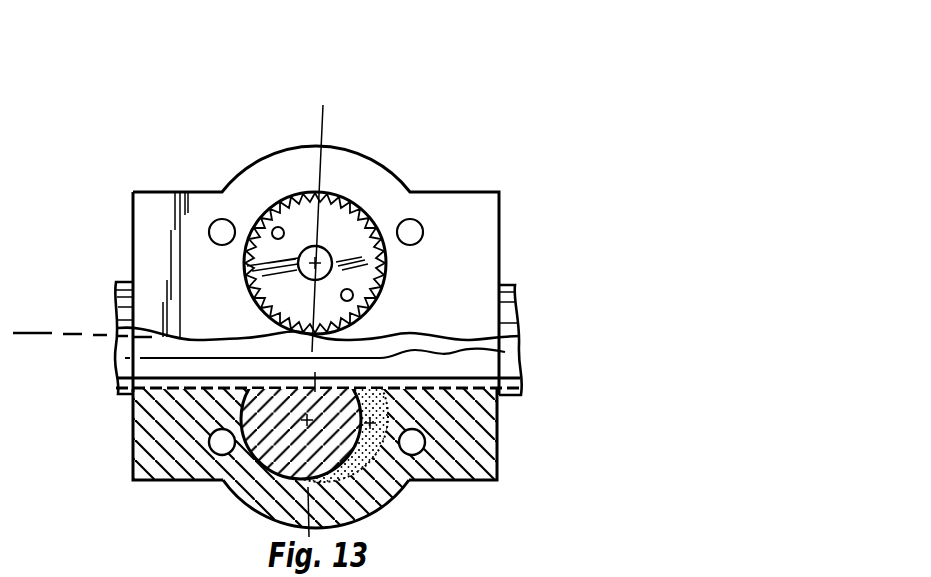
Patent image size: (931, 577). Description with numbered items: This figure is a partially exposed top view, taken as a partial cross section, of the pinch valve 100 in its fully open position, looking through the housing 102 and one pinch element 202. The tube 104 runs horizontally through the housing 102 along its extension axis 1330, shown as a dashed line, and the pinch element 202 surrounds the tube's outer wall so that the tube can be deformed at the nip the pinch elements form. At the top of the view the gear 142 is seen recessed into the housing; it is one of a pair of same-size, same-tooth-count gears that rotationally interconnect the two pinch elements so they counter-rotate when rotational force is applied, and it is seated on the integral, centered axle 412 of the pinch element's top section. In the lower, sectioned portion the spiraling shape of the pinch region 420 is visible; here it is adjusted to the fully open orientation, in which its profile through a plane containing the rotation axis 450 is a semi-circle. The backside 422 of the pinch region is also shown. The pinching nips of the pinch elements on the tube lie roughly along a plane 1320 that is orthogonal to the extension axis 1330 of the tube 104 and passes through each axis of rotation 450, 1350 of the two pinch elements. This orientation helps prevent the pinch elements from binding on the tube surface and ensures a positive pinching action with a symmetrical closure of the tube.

The valve 100 is at (385, 231).
The housing 102 is at (514, 171).
The tube 104 is at (374, 461).
The gear 142 is at (395, 265).
The pinch element 202 is at (365, 461).
The axle 412 is at (327, 248).
The pinch region 420 is at (420, 486).
The backside of the pinch region 422 is at (244, 432).
The rotation axis 450 is at (330, 270).
The plane 1320 is at (327, 118).
The extension axis of the tube 1330 is at (72, 332).
The axis of rotation 1350 is at (505, 336).